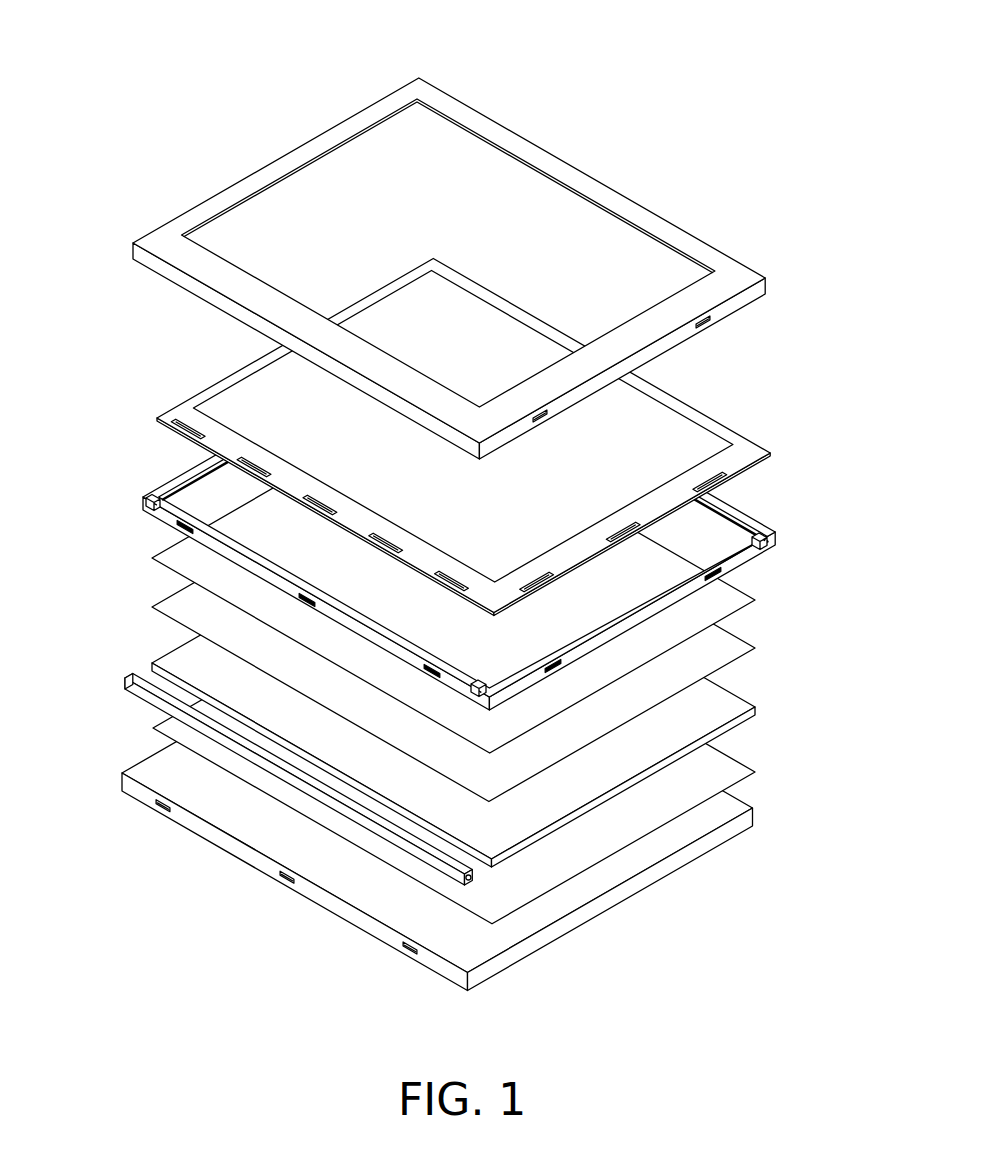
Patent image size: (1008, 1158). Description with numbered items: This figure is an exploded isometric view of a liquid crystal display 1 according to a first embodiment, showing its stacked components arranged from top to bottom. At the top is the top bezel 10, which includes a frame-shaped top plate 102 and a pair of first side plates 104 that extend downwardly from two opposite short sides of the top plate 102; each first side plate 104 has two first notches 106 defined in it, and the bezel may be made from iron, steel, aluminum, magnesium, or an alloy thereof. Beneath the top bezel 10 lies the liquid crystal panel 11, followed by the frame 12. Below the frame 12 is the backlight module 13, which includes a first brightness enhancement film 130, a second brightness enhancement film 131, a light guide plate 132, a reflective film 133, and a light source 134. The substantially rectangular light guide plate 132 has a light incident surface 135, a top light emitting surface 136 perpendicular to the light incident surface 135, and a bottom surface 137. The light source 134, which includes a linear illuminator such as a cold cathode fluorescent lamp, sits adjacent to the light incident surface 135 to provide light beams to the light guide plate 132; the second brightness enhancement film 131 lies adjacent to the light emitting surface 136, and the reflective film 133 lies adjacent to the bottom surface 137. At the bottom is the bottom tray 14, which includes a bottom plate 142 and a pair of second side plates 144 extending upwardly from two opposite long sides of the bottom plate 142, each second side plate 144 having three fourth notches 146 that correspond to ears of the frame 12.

The liquid crystal display 1 is at (406, 37).
The top bezel 10 is at (477, 268).
The top plate 102 is at (607, 196).
The first side plates 104 is at (746, 300).
The first notches 106 is at (708, 323).
The liquid crystal panel 11 is at (695, 434).
The frame 12 is at (739, 556).
The backlight module 13 is at (435, 705).
The first brightness enhancement film 130 is at (178, 562).
The second brightness enhancement film 131 is at (178, 608).
The light guide plate 132 is at (415, 734).
The reflective film 133 is at (173, 730).
The light source 134 is at (311, 836).
The light incident surface 135 is at (480, 856).
The light emitting surface 136 is at (597, 775).
The bottom surface 137 is at (557, 833).
The bottom tray 14 is at (469, 800).
The bottom plate 142 is at (713, 827).
The second side plates 144 is at (373, 923).
The fourth notches 146 is at (287, 880).